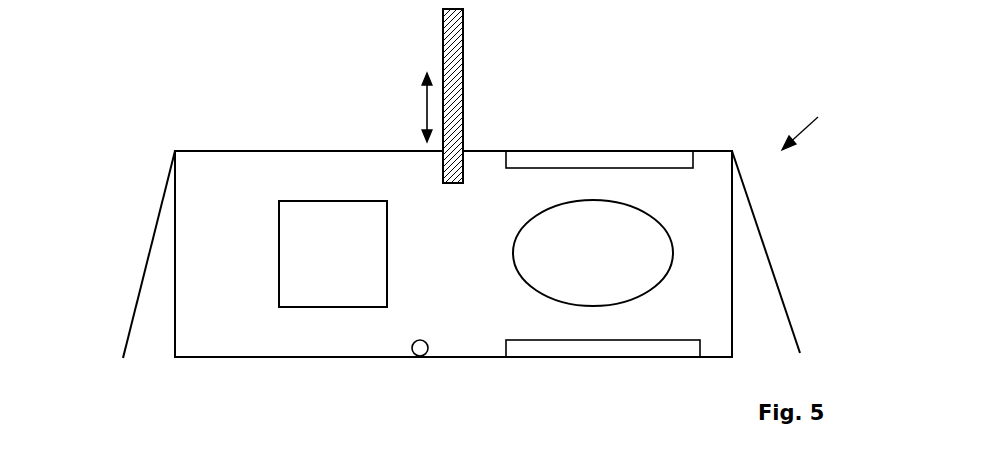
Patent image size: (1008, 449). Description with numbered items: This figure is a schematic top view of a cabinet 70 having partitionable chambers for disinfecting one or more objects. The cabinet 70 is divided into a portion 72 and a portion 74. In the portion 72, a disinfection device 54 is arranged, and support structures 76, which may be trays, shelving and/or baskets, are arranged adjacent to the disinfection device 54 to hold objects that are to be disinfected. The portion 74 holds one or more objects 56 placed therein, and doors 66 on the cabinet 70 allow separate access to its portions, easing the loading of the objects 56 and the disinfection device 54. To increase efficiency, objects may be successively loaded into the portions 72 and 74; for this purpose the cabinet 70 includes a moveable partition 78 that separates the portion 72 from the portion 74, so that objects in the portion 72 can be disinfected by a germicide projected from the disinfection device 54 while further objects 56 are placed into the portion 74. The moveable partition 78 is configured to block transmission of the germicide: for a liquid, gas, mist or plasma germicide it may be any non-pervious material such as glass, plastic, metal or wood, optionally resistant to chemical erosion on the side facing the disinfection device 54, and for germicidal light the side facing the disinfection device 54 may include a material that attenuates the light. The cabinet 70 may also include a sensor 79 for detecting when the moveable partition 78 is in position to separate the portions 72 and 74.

The disinfection device 54 is at (593, 253).
The objects 56 is at (333, 254).
The doors 66 is at (143, 273).
The cabinet 70 is at (815, 127).
The portion 72 is at (695, 307).
The portion 74 is at (300, 330).
The support structures 76 is at (605, 148).
The moveable partition 78 is at (453, 97).
The sensor 79 is at (418, 358).